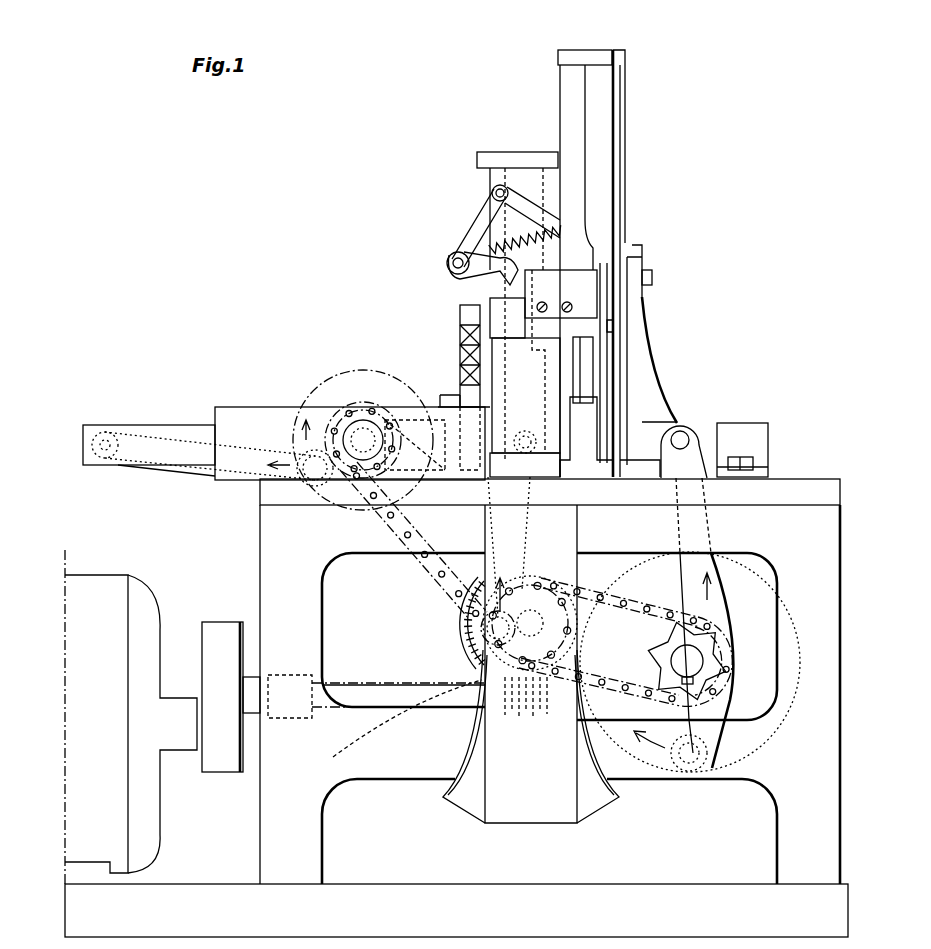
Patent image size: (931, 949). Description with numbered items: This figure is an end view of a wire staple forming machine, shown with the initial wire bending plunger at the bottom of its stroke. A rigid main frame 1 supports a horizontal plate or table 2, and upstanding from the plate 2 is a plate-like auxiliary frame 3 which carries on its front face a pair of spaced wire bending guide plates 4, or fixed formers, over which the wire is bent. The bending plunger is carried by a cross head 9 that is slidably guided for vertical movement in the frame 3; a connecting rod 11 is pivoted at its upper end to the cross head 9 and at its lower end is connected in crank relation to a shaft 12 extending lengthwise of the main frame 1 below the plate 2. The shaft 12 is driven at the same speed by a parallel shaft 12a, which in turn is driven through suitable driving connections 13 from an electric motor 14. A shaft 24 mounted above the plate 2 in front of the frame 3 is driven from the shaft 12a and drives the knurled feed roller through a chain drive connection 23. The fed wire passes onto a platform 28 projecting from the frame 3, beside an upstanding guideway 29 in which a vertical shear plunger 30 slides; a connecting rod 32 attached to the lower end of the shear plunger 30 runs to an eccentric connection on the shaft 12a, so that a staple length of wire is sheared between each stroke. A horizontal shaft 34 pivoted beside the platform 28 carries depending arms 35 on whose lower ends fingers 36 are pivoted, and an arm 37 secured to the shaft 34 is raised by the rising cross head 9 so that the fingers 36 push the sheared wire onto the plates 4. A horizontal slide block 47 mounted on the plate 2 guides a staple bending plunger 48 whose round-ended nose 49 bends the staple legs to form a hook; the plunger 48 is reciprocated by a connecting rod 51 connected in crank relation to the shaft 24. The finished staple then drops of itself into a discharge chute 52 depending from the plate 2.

The main frame 1 is at (300, 618).
The horizontal plate or table 2 is at (782, 481).
The auxiliary frame 3 is at (600, 383).
The wire bending guide plates 4 is at (587, 353).
The cross head 9 is at (632, 397).
The connecting rod 11 is at (718, 608).
The shaft 12 is at (672, 658).
The shaft 12a is at (538, 585).
The driving connections 13 is at (223, 738).
The electric motor 14 is at (148, 618).
The chain or other drive connection 23 is at (462, 336).
The shaft 24 is at (363, 438).
The platform 28 is at (507, 308).
The guideway 29 is at (525, 180).
The shear plunger 30 is at (502, 370).
The connecting rod 32 is at (480, 541).
The horizontal shaft 34 is at (490, 191).
The depending arms 35 is at (480, 222).
The fingers 36 is at (452, 262).
The arm 37 is at (533, 213).
The slide block 47 is at (244, 425).
The staple bending plunger 48 is at (157, 445).
The nose 49 is at (492, 445).
The connecting rod 51 is at (202, 470).
The discharge chute 52 is at (537, 794).